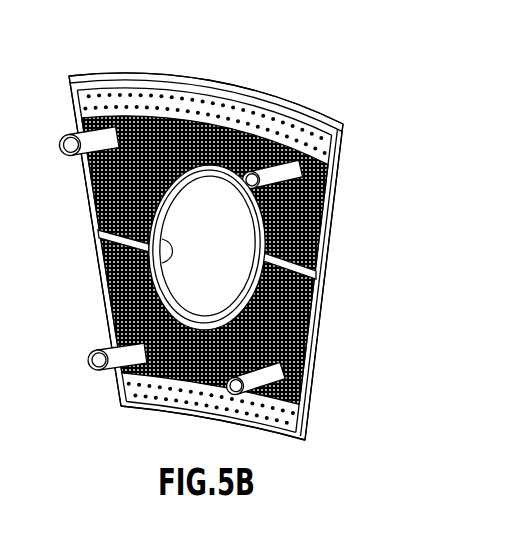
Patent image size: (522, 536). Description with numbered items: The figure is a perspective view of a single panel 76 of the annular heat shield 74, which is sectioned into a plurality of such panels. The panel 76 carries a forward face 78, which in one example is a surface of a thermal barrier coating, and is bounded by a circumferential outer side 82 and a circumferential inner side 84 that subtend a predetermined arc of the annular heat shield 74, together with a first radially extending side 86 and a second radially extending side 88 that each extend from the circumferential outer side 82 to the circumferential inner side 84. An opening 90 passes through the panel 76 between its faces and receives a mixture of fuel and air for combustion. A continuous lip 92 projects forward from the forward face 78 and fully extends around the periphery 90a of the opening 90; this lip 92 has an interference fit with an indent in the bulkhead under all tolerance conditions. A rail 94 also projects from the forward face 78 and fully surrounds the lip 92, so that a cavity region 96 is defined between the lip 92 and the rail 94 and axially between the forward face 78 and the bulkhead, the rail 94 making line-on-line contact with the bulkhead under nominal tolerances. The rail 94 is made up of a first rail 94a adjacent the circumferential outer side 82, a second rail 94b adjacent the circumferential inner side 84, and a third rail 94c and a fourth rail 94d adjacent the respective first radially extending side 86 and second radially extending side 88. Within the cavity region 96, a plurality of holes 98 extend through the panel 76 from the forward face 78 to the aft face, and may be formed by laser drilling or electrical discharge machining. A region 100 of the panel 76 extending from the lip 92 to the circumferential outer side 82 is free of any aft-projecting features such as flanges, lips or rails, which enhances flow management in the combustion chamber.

The annular heat shield 74 is at (323, 386).
The panel 76 is at (332, 147).
The forward face 78 is at (163, 88).
The circumferential outer side 82 is at (270, 80).
The circumferential inner side 84 is at (143, 404).
The first radially extending side 86 is at (326, 257).
The second radially extending side 88 is at (82, 270).
The opening 90 is at (220, 258).
The periphery 90a is at (98, 252).
The continuous lip 92 is at (142, 222).
The rail 94 is at (313, 328).
The first rail 94a is at (77, 78).
The second rail 94b is at (262, 418).
The third rail 94c is at (78, 170).
The fourth rail 94d is at (317, 213).
The cavity region 96 is at (185, 373).
The holes 98 is at (263, 117).
The region 100 is at (198, 82).